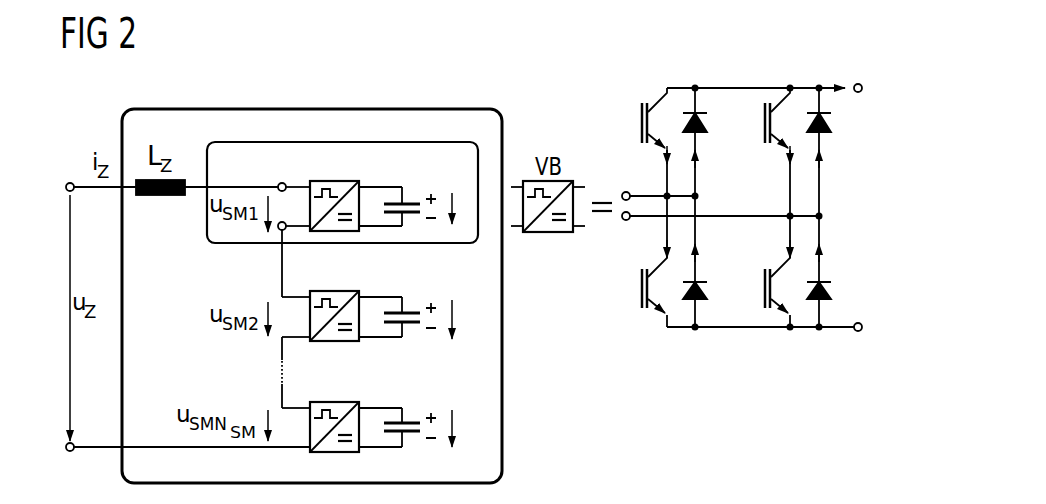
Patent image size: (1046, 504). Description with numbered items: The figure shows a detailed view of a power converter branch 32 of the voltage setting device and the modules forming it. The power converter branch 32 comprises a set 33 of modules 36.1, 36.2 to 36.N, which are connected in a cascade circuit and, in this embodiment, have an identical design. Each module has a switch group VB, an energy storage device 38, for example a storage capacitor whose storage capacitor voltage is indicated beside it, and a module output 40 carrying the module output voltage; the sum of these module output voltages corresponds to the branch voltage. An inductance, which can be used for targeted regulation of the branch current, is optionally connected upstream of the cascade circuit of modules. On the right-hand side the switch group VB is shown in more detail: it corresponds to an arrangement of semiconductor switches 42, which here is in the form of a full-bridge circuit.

The power converter branch 32 is at (300, 108).
The set of modules 33 is at (358, 170).
The first module 36.1 is at (343, 153).
The second module 36.2 is at (478, 318).
The N_SM-th module 36.N is at (478, 432).
The energy storage device 38 is at (410, 182).
The module output 40 is at (280, 178).
The arrangement of semiconductor switches 42 is at (640, 91).